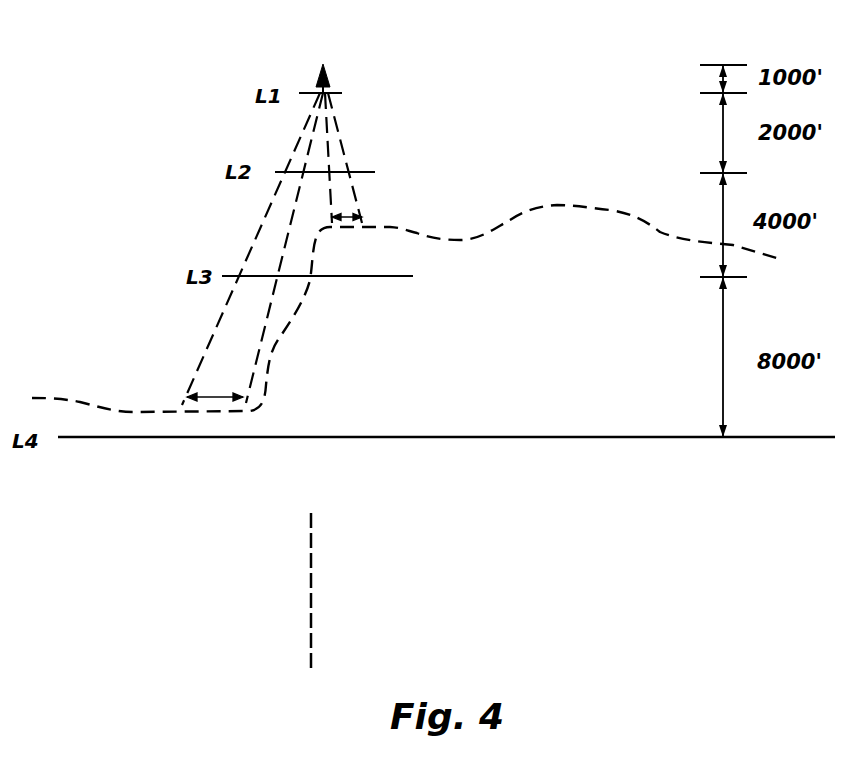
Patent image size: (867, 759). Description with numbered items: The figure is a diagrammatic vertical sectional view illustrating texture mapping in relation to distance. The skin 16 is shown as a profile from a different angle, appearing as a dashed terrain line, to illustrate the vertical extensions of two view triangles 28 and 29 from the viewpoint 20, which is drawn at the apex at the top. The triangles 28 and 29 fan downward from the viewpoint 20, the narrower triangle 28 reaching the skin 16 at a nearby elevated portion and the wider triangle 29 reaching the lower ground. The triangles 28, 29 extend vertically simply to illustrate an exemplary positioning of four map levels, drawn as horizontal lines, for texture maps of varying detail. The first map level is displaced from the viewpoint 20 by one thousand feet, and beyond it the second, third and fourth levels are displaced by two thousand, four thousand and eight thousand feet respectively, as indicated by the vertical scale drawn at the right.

The viewpoint 20 is at (323, 65).
The view triangle 28 is at (340, 137).
The view triangle 29 is at (225, 357).
The skin 16 is at (417, 232).